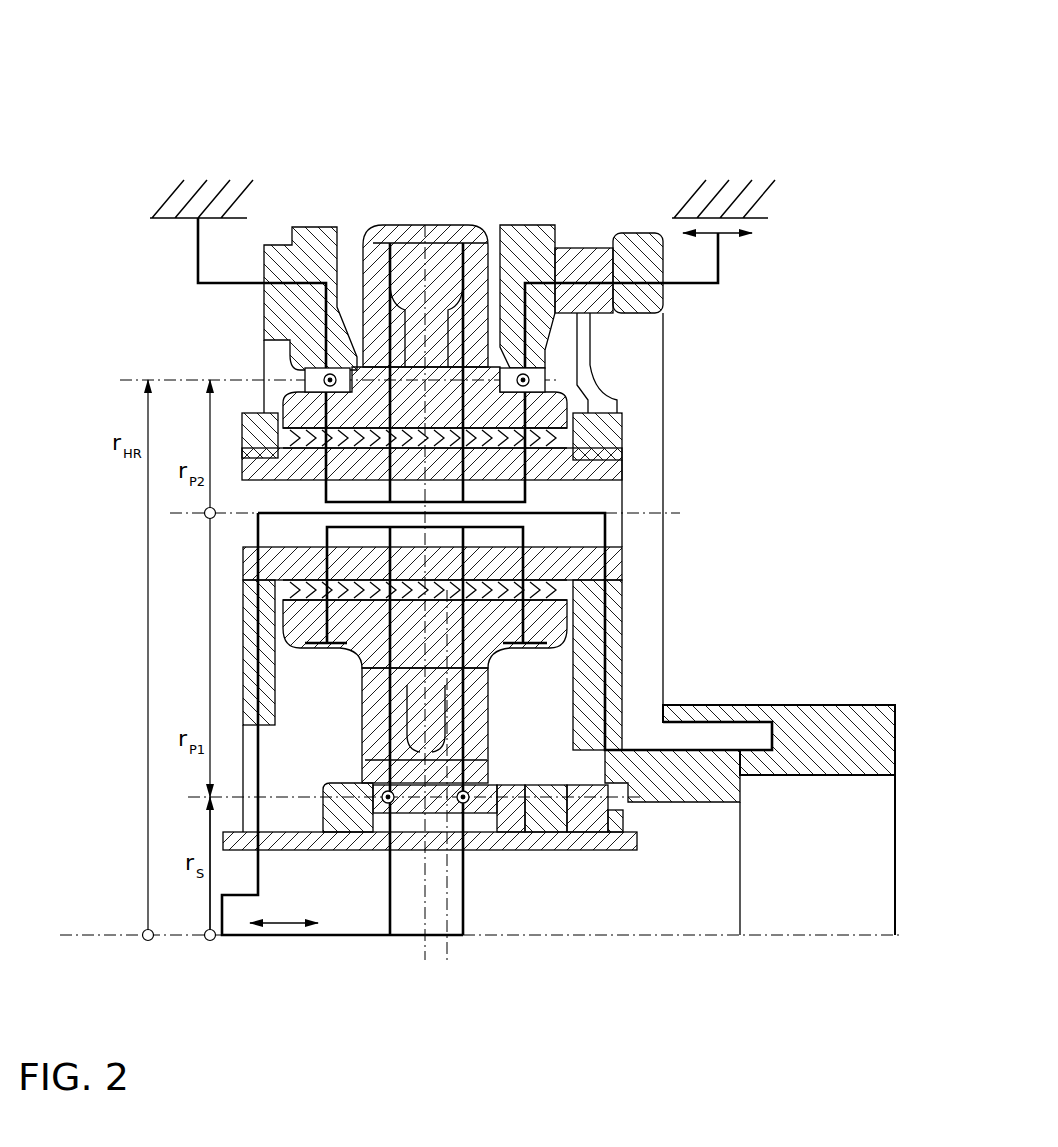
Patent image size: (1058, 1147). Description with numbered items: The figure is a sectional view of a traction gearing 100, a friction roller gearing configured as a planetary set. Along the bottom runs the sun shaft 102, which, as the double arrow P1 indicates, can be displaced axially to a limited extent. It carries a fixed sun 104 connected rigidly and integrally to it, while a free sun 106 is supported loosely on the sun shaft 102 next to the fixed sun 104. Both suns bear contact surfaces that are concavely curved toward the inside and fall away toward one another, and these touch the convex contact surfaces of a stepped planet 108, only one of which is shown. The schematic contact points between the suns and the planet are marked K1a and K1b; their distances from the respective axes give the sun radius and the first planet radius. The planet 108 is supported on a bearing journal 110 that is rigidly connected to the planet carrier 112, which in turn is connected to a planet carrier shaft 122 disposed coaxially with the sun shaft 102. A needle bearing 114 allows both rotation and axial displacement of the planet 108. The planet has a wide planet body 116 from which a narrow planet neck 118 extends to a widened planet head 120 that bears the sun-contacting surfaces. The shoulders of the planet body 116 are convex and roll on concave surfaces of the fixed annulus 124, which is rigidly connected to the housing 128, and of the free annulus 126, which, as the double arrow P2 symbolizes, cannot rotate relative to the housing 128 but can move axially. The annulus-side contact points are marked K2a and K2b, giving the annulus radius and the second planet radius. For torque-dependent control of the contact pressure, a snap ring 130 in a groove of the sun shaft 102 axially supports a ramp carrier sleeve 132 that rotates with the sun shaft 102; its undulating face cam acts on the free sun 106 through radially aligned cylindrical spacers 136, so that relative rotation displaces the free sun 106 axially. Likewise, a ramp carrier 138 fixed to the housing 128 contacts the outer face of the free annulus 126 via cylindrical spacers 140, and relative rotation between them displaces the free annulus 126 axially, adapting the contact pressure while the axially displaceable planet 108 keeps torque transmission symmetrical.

The traction gearing 100 is at (722, 92).
The sun shaft 102 is at (535, 842).
The fixed sun 104 is at (362, 828).
The free sun 106 is at (505, 820).
The planet 108 is at (637, 513).
The bearing journal 110 is at (551, 465).
The planet carrier 112 is at (613, 608).
The needle bearing 114 is at (553, 433).
The planet body 116 is at (487, 640).
The planet neck 118 is at (437, 705).
The planet head 120 is at (478, 765).
The planet carrier shaft 122 is at (845, 728).
The fixed annulus 124 is at (315, 240).
The free annulus 126 is at (515, 240).
The housing 128 is at (185, 192).
The snap ring 130 is at (612, 812).
The ramp carrier sleeve 132 is at (588, 818).
The spacers 136 is at (550, 813).
The ramp carrier 138 is at (638, 245).
The spacers 140 is at (585, 255).
The contact point K1a is at (388, 797).
The contact point K1b is at (463, 797).
The contact point K2a is at (330, 379).
The contact point K2b is at (523, 379).
The double arrow P1 is at (285, 930).
The double arrow P2 is at (723, 238).